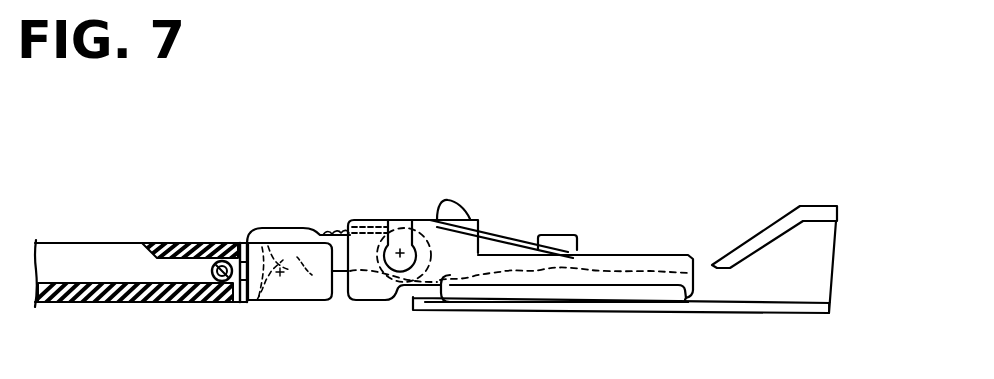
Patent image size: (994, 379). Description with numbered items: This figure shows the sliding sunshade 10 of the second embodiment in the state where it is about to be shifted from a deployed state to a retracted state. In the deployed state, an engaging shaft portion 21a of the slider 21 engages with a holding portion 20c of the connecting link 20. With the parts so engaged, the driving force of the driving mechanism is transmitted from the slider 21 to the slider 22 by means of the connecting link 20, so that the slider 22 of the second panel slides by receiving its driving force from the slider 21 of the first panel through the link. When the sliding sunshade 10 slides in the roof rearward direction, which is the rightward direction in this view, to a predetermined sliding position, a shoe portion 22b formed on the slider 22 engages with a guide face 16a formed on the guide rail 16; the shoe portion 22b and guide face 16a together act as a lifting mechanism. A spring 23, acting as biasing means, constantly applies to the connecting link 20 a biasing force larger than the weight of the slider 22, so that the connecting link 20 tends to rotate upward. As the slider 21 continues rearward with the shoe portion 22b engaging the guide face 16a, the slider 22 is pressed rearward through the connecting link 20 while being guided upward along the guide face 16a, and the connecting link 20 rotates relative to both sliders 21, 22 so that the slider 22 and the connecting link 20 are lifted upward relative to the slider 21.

The sliding sunshade 10 is at (145, 208).
The slider 21 is at (121, 304).
The engaging shaft portion 21a is at (260, 303).
The holding portion 20c is at (294, 231).
The connecting link 20 is at (329, 222).
The spring 23 is at (424, 210).
The slider 22 is at (527, 260).
The shoe portion 22b is at (557, 278).
The guide rail 16 is at (777, 309).
The guide face 16a is at (772, 228).